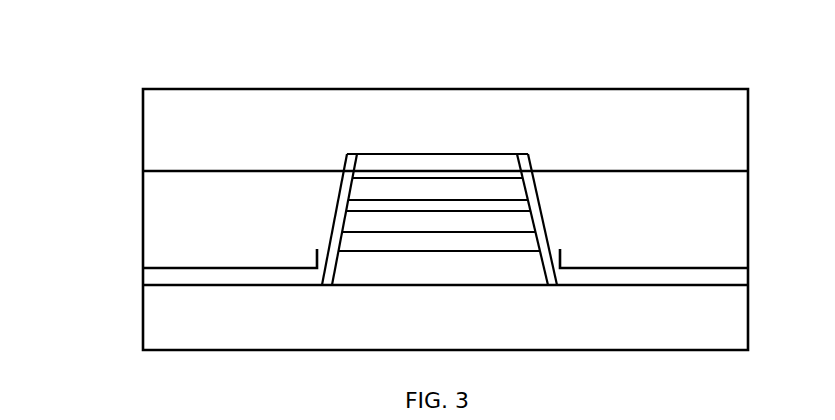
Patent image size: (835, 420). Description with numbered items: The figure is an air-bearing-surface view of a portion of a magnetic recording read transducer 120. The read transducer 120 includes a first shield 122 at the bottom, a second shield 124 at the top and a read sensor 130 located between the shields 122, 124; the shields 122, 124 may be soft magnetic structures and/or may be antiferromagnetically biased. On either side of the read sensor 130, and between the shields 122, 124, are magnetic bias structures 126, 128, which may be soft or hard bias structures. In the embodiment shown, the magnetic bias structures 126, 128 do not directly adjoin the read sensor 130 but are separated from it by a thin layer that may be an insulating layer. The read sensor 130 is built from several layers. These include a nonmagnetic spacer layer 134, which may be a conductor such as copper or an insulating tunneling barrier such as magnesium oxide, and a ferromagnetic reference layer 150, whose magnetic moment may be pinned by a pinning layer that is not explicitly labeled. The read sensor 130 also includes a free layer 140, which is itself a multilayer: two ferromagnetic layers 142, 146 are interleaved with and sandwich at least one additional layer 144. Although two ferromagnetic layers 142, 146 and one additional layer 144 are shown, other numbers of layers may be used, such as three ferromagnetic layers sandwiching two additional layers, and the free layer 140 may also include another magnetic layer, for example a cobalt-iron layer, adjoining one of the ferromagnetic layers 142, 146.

The read transducer 120 is at (418, 34).
The first shield 122 is at (750, 317).
The second shield 124 is at (143, 138).
The magnetic bias structure 126 is at (142, 237).
The magnetic bias structure 128 is at (750, 237).
The read sensor 130 is at (503, 310).
The nonmagnetic spacer layer 134 is at (343, 207).
The free layer 140 is at (356, 213).
The ferromagnetic layer 142 is at (533, 222).
The additional layer 144 is at (535, 203).
The ferromagnetic layer 146 is at (530, 187).
The ferromagnetic reference layer 150 is at (332, 242).